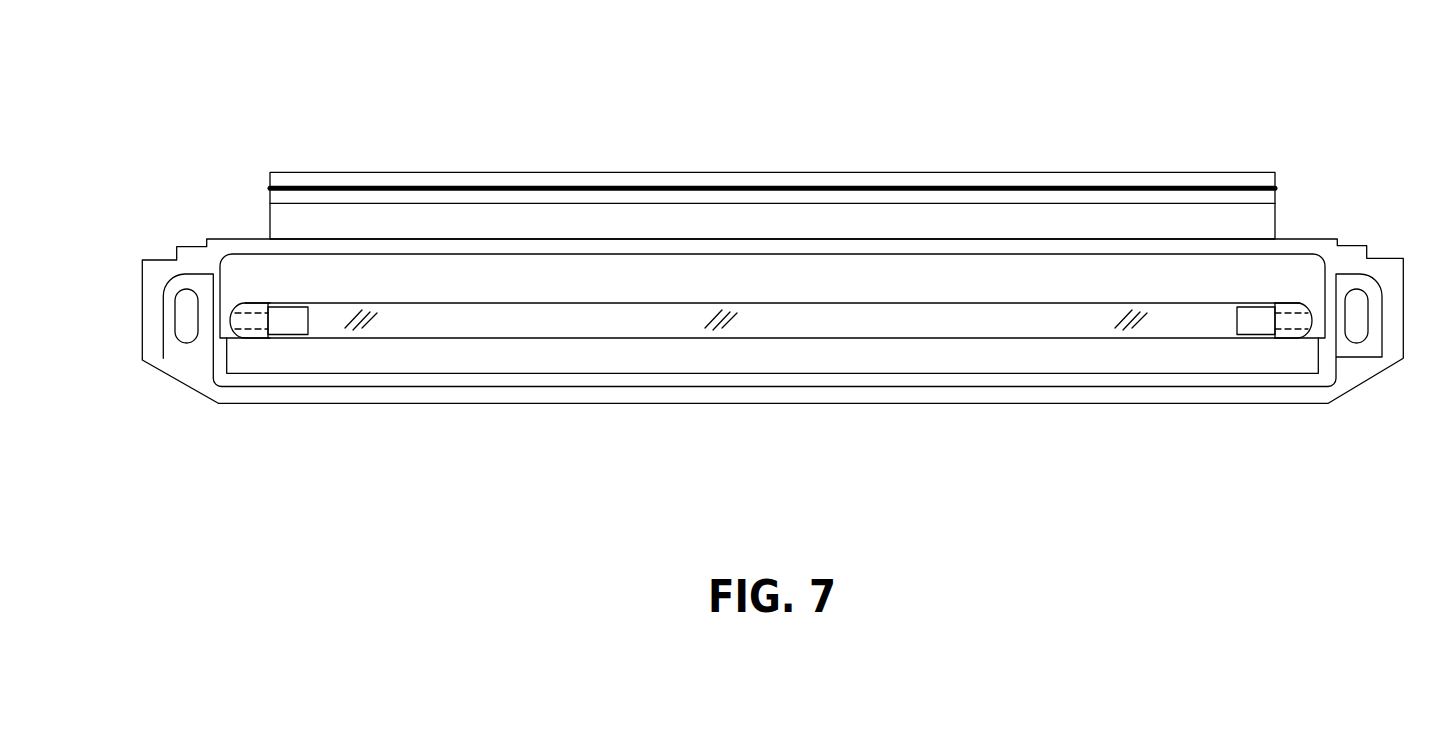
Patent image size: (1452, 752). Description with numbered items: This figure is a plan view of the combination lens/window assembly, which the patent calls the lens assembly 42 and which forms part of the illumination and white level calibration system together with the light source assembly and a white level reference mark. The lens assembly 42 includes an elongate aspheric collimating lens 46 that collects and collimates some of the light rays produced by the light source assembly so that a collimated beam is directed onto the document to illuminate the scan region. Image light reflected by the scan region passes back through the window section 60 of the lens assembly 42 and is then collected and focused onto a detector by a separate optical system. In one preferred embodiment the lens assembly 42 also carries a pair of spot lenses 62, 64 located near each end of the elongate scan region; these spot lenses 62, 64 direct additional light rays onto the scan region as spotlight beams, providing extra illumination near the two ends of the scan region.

The lens assembly 42 is at (206, 89).
The elongate aspheric collimating lens 46 is at (570, 357).
The window section 60 is at (374, 360).
The spot lens 62 is at (241, 305).
The spot lens 64 is at (1307, 305).